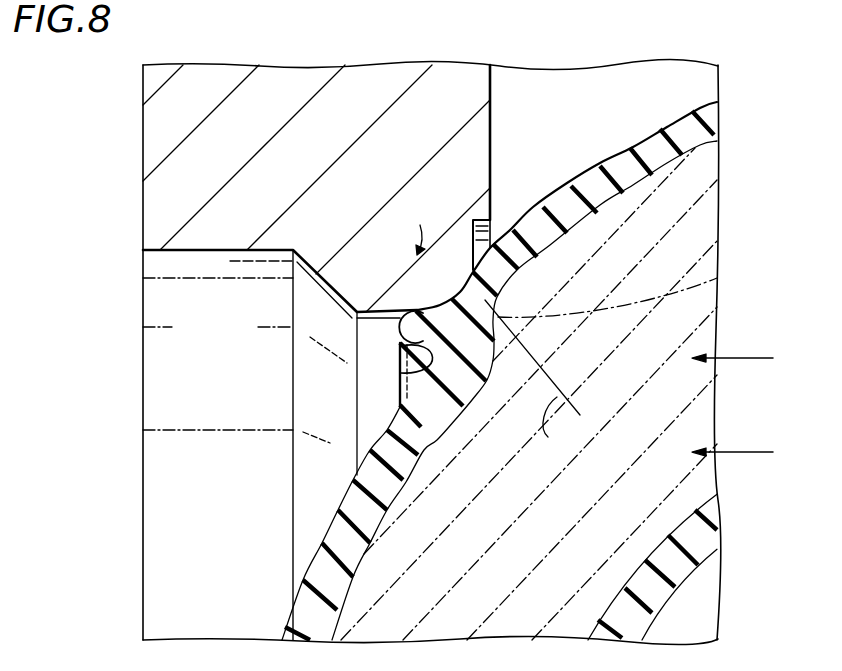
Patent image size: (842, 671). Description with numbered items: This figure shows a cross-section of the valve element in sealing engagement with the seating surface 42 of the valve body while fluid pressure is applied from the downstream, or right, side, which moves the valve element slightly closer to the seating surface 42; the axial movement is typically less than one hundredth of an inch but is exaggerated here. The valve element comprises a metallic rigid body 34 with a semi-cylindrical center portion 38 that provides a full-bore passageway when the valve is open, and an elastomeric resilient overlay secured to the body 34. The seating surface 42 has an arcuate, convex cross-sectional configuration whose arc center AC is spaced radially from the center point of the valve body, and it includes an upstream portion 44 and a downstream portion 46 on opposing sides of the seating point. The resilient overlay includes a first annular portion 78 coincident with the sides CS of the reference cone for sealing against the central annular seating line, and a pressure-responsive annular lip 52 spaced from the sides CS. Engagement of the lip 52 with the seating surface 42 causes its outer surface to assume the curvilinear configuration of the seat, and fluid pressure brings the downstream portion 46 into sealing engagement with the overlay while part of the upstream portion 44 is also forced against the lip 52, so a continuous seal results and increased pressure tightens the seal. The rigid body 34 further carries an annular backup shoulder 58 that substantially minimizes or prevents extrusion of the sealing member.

The rigid body 34 is at (706, 337).
The semi-cylindrical center portion 38 is at (693, 605).
The seating surface 42 is at (399, 340).
The upstream portion of the seating surface 44 is at (412, 366).
The downstream portion of the seating surface 46 is at (502, 262).
The lip 52 is at (412, 306).
The backup shoulder 58 is at (705, 284).
The first annular portion 78 is at (505, 292).
The arc center AC is at (418, 227).
The sides of the reference cone CS is at (532, 382).